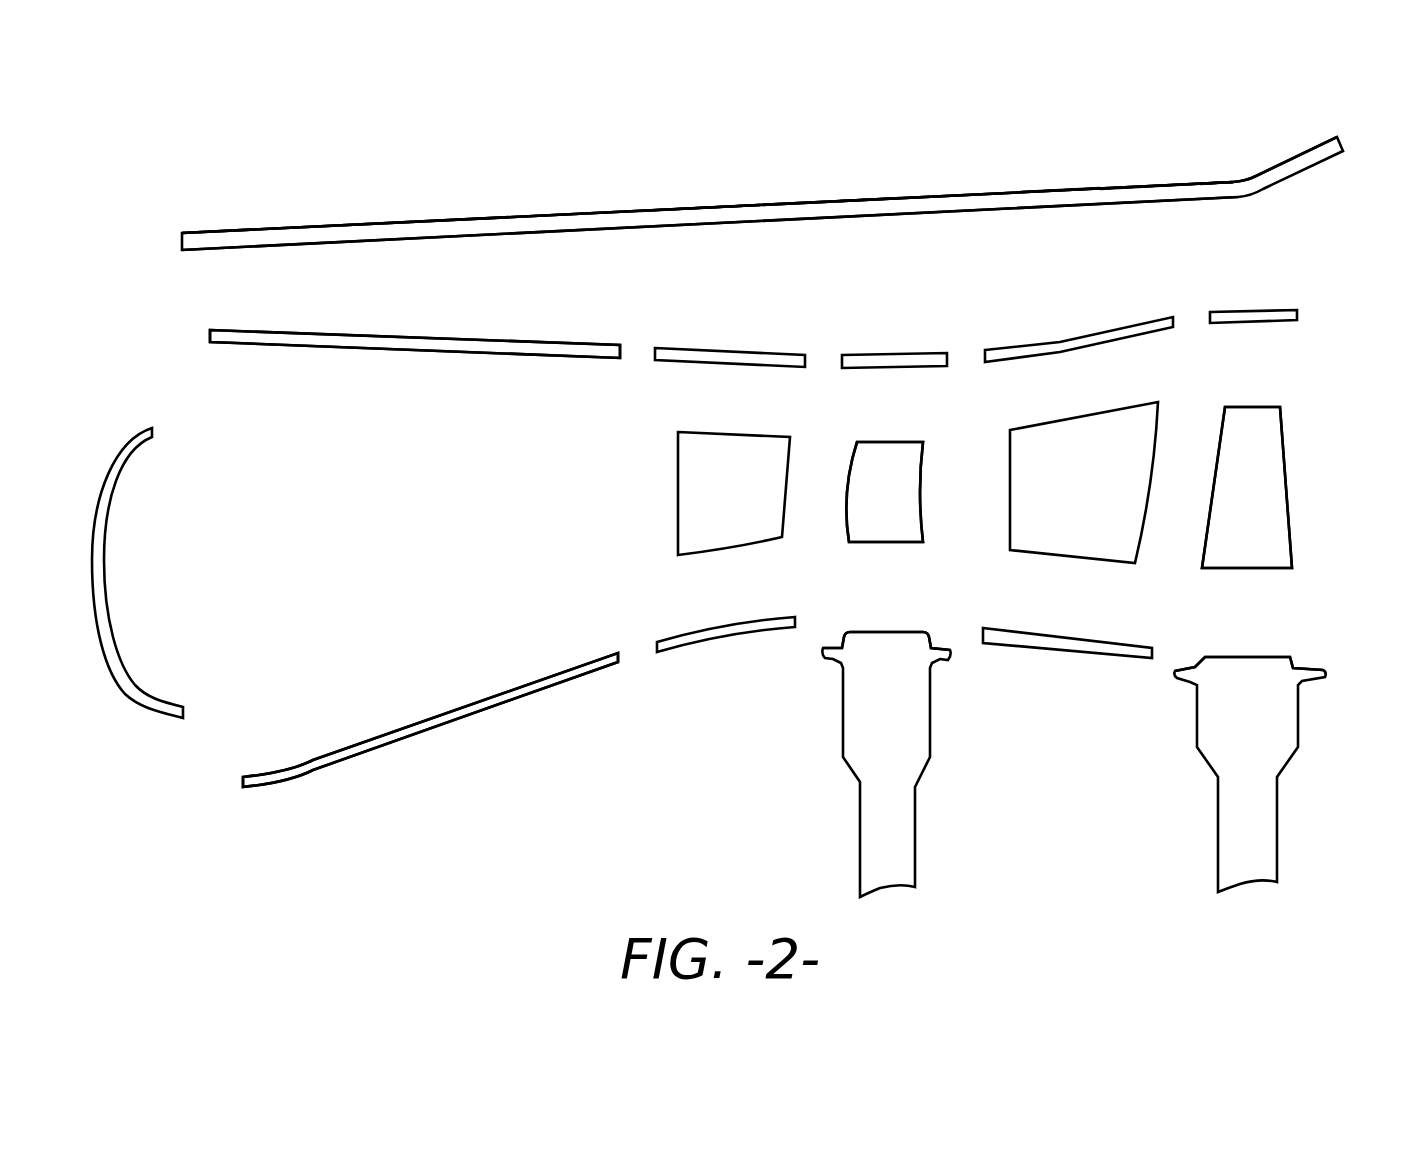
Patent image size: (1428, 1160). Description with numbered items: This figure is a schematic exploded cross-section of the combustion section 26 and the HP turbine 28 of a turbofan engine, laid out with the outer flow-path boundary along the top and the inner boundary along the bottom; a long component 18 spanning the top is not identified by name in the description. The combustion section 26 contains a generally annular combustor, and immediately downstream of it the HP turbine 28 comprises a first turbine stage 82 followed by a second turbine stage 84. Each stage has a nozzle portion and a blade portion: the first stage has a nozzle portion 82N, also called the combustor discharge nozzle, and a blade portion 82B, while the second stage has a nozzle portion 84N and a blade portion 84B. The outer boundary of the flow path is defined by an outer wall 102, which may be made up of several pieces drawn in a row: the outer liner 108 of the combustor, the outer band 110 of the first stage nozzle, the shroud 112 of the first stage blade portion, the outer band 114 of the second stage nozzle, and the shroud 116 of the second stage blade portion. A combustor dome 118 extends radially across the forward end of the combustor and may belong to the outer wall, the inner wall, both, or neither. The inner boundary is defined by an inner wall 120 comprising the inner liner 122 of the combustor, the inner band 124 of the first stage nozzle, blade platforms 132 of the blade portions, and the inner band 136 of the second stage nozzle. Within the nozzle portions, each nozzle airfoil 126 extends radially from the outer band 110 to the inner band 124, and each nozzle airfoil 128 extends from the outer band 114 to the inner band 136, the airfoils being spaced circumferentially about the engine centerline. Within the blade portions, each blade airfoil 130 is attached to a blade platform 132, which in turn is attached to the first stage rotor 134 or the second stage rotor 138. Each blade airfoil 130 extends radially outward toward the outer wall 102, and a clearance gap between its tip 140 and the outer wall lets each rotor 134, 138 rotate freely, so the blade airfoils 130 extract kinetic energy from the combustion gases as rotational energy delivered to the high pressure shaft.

The panel 18 is at (318, 227).
The combustion section 26 is at (457, 193).
The HP turbine 28 is at (998, 163).
The first turbine stage 82 is at (808, 167).
The nozzle portion of first turbine stage 82N is at (733, 268).
The blade portion of first turbine stage 82B is at (875, 290).
The second turbine stage 84 is at (1160, 163).
The nozzle portion of second turbine stage 84N is at (1060, 273).
The blade portion of second turbine stage 84B is at (1223, 242).
The outer wall 102 is at (237, 312).
The outer liner 108 is at (465, 337).
The outer band 110 is at (720, 350).
The shroud 112 is at (895, 355).
The outer band 114 is at (1057, 340).
The shroud 116 is at (1230, 308).
The combustor dome 118 is at (113, 600).
The inner wall 120 is at (292, 823).
The inner liner 122 is at (475, 713).
The inner band 124 is at (703, 642).
The nozzle airfoil 126 is at (692, 488).
The nozzle airfoil 128 is at (1090, 537).
The blade airfoil 130 is at (888, 522).
The blade platform 132 is at (833, 655).
The first stage rotor 134 is at (897, 832).
The inner band 136 is at (1053, 645).
The second stage rotor 138 is at (1260, 837).
The tip 140 is at (892, 428).